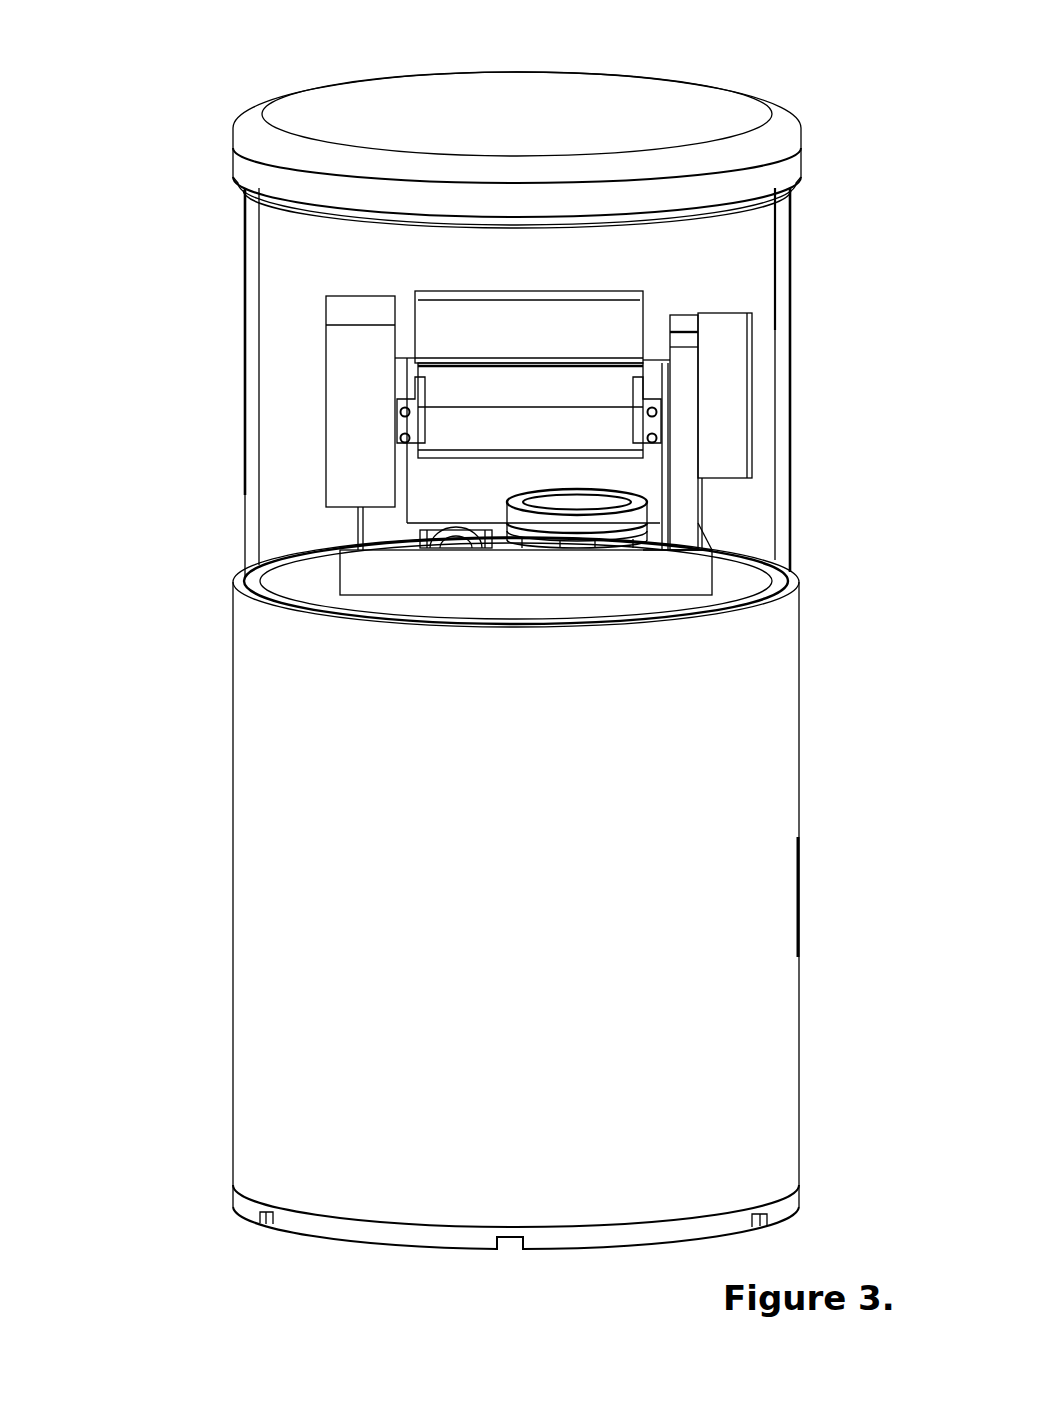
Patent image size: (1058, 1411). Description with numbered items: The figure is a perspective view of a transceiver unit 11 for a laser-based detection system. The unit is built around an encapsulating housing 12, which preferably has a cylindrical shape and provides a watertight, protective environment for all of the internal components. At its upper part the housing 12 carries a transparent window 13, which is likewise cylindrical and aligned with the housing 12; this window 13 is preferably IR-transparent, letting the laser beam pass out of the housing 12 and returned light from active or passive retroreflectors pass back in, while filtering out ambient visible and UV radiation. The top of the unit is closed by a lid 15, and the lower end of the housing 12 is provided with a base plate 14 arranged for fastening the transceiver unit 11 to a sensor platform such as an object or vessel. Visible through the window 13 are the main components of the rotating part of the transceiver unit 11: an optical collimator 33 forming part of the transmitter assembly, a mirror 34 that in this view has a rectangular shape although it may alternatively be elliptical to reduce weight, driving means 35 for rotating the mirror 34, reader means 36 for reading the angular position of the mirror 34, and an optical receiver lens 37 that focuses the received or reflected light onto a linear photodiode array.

The transceiver unit 11 is at (225, 110).
The encapsulating housing 12 is at (770, 623).
The transparent window 13 is at (270, 322).
The base plate 14 is at (750, 1055).
The lid 15 is at (647, 95).
The optical collimator 33 is at (402, 536).
The mirror 34 is at (556, 320).
The driving means 35 is at (327, 368).
The reader means 36 is at (710, 397).
The optical receiver lens 37 is at (499, 556).